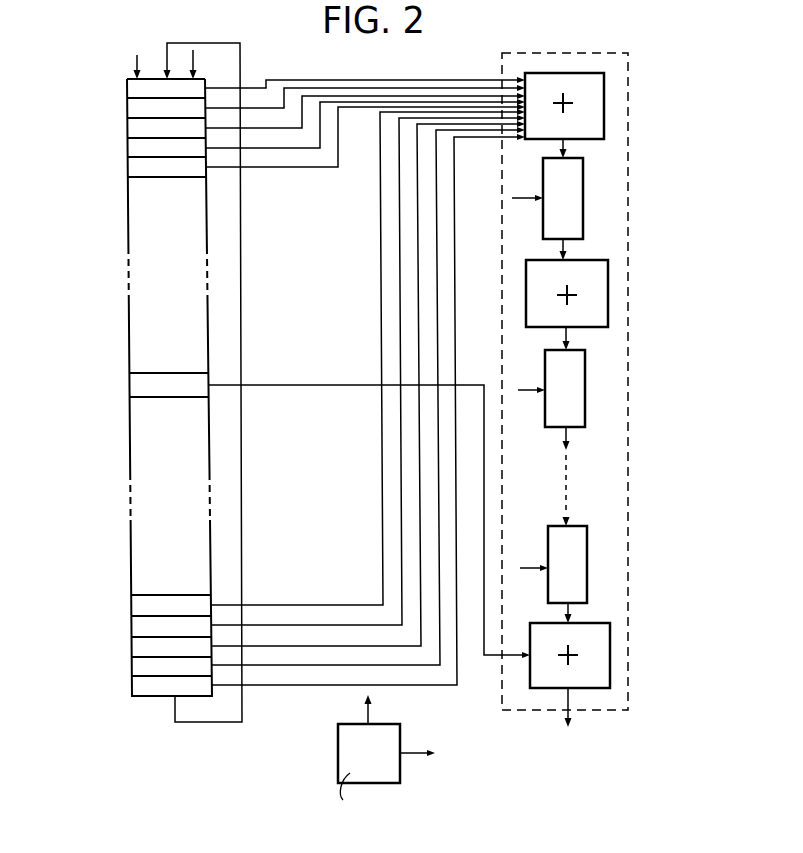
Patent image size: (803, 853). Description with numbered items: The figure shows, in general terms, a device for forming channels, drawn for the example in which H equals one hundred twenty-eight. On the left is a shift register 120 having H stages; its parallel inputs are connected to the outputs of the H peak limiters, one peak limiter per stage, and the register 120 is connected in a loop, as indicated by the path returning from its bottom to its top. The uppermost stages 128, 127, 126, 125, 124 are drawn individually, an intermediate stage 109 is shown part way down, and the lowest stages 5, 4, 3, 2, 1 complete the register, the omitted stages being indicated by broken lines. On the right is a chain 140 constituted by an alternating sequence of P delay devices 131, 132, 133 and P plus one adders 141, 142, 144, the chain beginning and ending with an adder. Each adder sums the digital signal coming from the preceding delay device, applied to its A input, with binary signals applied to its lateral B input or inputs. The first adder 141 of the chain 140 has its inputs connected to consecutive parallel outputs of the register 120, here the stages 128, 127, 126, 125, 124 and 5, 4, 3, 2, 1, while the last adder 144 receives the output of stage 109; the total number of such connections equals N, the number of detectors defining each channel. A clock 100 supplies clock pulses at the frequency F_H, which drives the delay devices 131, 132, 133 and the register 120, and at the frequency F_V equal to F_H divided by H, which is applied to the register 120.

The shift register stage 128 is at (119, 88).
The shift register stage 127 is at (119, 108).
The shift register stage 126 is at (119, 128).
The shift register stage 125 is at (119, 148).
The shift register stage 124 is at (119, 167).
The shift register stage 109 is at (121, 385).
The shift register 120 is at (129, 434).
The shift register stage 5 is at (123, 605).
The shift register stage 4 is at (123, 625).
The shift register stage 3 is at (123, 646).
The shift register stage 2 is at (123, 665).
The shift register stage 1 is at (123, 685).
The clock 100 is at (355, 758).
The chain 140 is at (628, 90).
The adder 141 is at (593, 122).
The adder 142 is at (595, 298).
The adder 144 is at (598, 655).
The delay device 131 is at (570, 206).
The delay device 132 is at (573, 395).
The delay device 133 is at (577, 569).